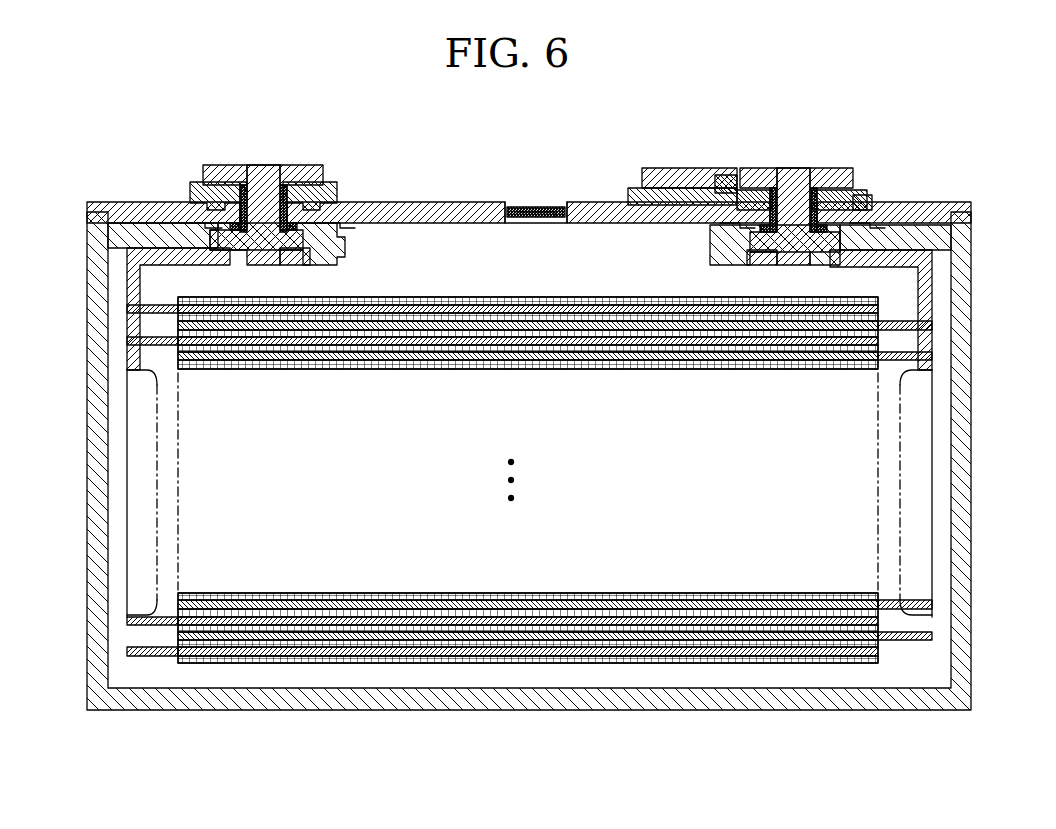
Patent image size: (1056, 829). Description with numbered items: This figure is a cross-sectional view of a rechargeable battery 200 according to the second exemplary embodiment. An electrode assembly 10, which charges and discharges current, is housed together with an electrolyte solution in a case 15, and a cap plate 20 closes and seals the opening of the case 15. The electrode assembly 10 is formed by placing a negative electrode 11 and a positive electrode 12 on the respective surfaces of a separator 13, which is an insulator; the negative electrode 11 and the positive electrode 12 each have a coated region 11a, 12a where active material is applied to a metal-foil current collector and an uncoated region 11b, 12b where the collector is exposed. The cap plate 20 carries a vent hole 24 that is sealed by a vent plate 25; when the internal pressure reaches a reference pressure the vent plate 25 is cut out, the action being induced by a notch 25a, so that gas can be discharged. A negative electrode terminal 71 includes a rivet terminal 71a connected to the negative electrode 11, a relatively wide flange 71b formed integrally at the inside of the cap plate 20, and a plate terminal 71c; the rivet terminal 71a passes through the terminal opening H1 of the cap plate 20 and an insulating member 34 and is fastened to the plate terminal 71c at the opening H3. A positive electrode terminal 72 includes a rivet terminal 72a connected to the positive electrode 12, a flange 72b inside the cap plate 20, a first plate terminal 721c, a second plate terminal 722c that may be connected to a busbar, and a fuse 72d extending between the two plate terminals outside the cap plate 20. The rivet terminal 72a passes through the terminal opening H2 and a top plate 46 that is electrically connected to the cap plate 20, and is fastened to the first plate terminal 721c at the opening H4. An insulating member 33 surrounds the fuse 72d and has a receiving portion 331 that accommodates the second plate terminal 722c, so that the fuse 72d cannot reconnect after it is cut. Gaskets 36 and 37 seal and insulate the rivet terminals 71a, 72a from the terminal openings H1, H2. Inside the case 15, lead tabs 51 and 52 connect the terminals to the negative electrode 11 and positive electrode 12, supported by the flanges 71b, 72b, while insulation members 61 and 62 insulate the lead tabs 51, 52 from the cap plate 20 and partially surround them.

The rechargeable battery 200 is at (569, 110).
The electrode assembly 10 is at (528, 549).
The negative electrode 11 is at (501, 550).
The coated region 11a is at (218, 664).
The uncoated region 11b is at (148, 657).
The positive electrode 12 is at (555, 561).
The coated region 12a is at (770, 640).
The uncoated region 12b is at (905, 538).
The separator 13 is at (512, 660).
The case 15 is at (958, 392).
The cap plate 20 is at (437, 202).
The vent hole 24 is at (534, 223).
The vent plate 25 is at (560, 208).
The notch 25a is at (530, 208).
The insulating member 33 is at (636, 188).
The receiving portion 331 is at (656, 225).
The insulating member 34 is at (332, 186).
The gasket 36 is at (193, 195).
The gasket 37 is at (855, 190).
The top plate 46 is at (872, 205).
The lead tab 51 is at (130, 257).
The lead tab 52 is at (932, 282).
The insulation member 61 is at (123, 235).
The insulation member 62 is at (933, 238).
The negative electrode terminal 71 is at (293, 255).
The rivet terminal 71a is at (262, 266).
The flange 71b is at (345, 252).
The plate terminal 71c is at (222, 166).
The positive electrode terminal 72 is at (774, 248).
The rivet terminal 72a is at (790, 266).
The flange 72b is at (718, 250).
The fuse 72d is at (725, 168).
The first plate terminal 721c is at (841, 168).
The second plate terminal 722c is at (667, 168).
The terminal opening H1 is at (276, 186).
The terminal opening H2 is at (771, 186).
The opening H3 is at (247, 166).
The opening H4 is at (808, 168).